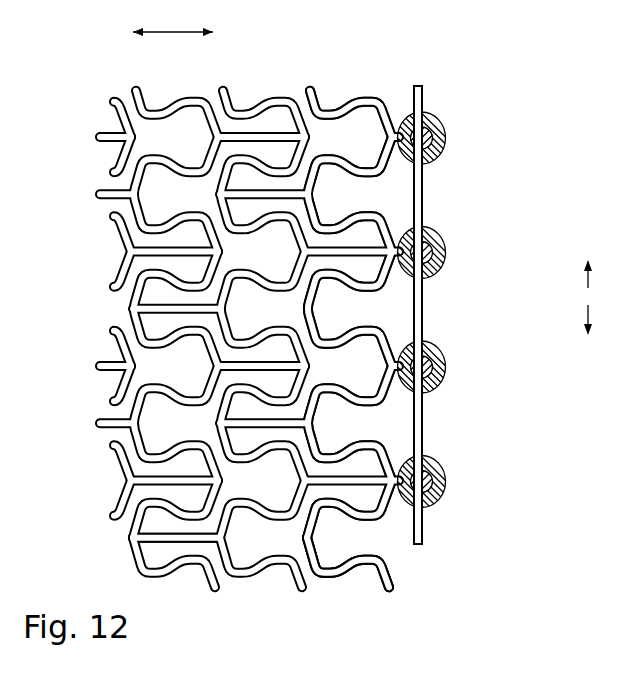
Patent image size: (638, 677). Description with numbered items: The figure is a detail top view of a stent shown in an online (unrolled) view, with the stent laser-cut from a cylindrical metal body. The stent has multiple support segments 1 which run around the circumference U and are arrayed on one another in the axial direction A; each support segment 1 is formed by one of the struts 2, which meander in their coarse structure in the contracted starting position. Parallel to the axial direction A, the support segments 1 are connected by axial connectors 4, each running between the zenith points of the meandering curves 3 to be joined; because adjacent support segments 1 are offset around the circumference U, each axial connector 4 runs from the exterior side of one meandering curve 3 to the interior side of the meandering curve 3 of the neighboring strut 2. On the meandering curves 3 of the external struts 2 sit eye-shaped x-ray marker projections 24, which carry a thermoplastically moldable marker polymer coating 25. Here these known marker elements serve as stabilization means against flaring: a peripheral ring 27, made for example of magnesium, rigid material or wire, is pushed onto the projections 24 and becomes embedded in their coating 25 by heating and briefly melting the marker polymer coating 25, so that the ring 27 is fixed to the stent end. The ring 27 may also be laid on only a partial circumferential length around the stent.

The support segment 1 is at (273, 295).
The strut 2 is at (372, 94).
The meandering curve 3 is at (328, 571).
The axial connector 4 is at (157, 538).
The x-ray marker projection 24 is at (436, 118).
The marker polymer coating 25 is at (442, 149).
The ring 27 is at (418, 417).
The axial direction A is at (173, 18).
The circumference U is at (597, 297).